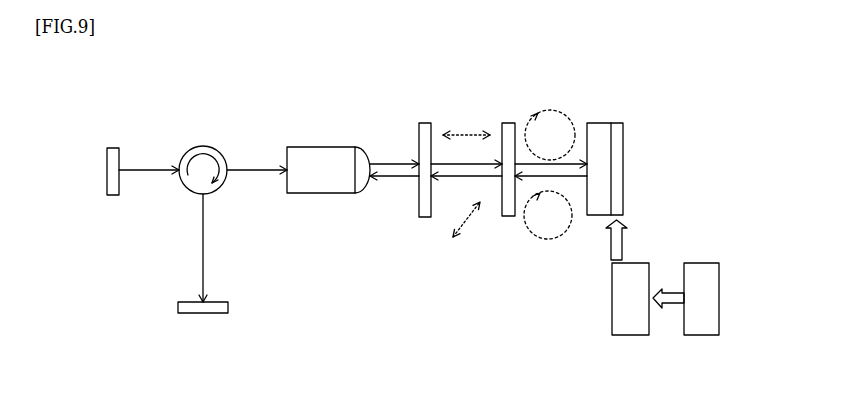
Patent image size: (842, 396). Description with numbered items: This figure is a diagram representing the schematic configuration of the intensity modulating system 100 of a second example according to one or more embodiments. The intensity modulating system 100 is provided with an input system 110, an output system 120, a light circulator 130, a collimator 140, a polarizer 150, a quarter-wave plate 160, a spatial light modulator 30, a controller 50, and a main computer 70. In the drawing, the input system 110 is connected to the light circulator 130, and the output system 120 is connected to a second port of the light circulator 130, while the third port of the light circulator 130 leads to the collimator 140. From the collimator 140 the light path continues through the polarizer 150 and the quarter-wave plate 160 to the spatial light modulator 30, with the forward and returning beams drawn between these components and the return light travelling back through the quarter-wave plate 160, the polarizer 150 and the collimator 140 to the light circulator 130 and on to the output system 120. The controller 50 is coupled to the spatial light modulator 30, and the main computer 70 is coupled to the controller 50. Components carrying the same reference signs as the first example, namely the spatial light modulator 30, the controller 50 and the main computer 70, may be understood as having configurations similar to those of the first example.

The intensity modulating system 100 is at (303, 115).
The input system 110 is at (107, 148).
The output system 120 is at (226, 313).
The light circulator 130 is at (200, 145).
The collimator 140 is at (312, 193).
The polarizer 150 is at (431, 122).
The quarter-wave plate 160 is at (510, 122).
The spatial light modulator 30 is at (623, 123).
The controller 50 is at (619, 335).
The main computer 70 is at (709, 263).